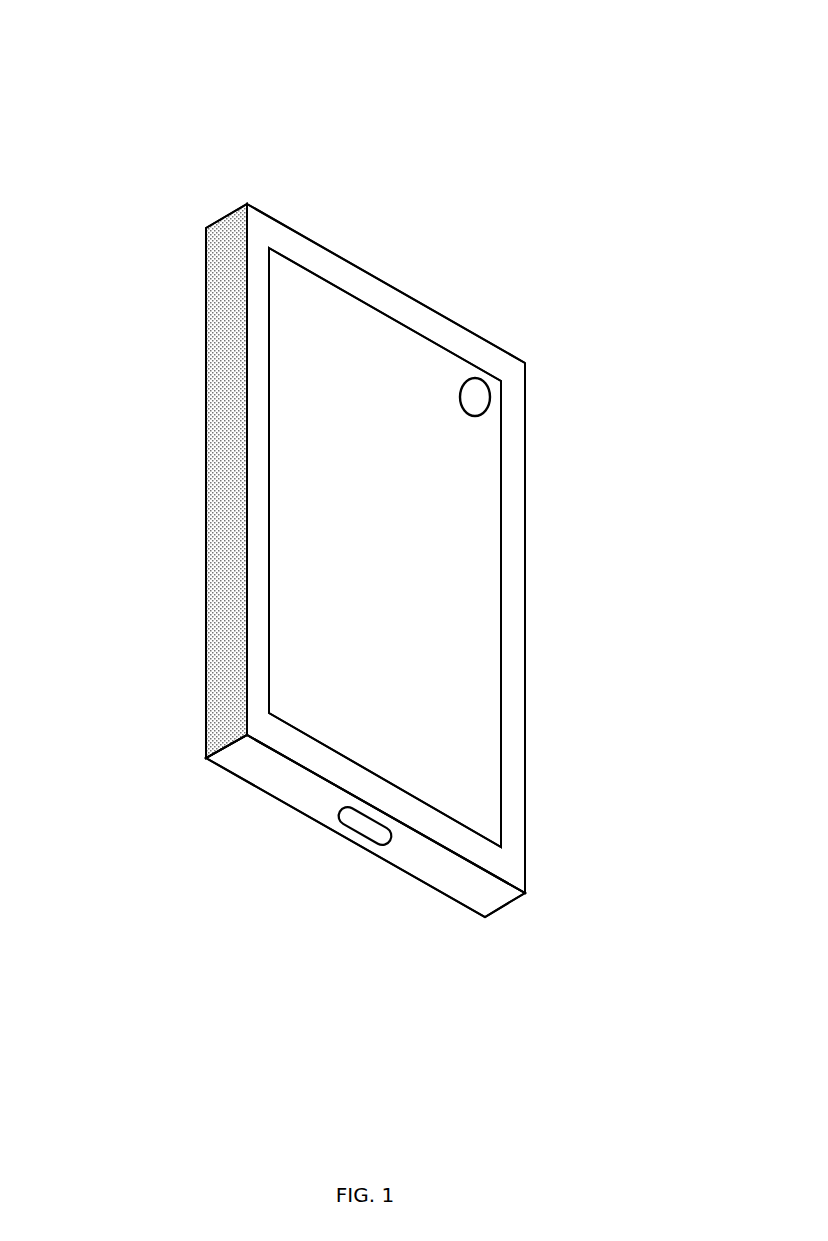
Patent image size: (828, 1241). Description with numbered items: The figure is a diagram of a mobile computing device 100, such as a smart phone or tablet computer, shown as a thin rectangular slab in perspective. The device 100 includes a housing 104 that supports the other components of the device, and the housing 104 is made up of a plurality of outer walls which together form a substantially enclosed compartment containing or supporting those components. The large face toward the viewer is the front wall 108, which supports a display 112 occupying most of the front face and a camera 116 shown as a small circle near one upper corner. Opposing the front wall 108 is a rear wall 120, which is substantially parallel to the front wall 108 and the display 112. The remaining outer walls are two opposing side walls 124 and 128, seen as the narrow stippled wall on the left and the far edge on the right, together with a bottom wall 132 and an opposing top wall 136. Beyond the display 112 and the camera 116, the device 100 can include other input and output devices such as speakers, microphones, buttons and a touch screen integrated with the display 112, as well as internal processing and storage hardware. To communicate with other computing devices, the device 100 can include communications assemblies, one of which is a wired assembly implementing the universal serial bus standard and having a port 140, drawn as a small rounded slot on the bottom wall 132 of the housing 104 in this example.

The mobile computing device 100 is at (298, 104).
The housing 104 is at (197, 323).
The front wall 108 is at (257, 468).
The display 112 is at (423, 556).
The camera 116 is at (477, 400).
The rear wall 120 is at (207, 532).
The side wall 124 is at (222, 648).
The side wall 128 is at (527, 647).
The bottom wall 132 is at (280, 783).
The top wall 136 is at (430, 308).
The port 140 is at (360, 830).